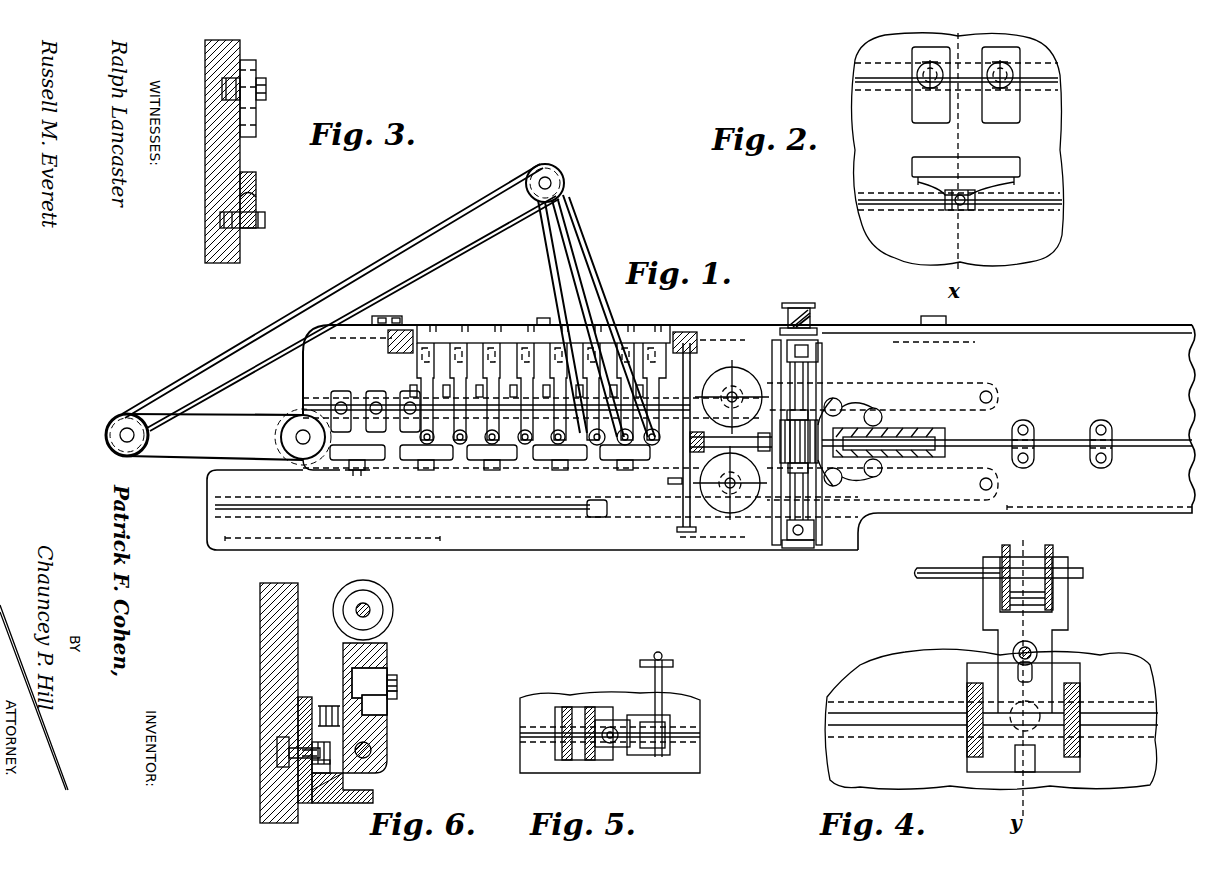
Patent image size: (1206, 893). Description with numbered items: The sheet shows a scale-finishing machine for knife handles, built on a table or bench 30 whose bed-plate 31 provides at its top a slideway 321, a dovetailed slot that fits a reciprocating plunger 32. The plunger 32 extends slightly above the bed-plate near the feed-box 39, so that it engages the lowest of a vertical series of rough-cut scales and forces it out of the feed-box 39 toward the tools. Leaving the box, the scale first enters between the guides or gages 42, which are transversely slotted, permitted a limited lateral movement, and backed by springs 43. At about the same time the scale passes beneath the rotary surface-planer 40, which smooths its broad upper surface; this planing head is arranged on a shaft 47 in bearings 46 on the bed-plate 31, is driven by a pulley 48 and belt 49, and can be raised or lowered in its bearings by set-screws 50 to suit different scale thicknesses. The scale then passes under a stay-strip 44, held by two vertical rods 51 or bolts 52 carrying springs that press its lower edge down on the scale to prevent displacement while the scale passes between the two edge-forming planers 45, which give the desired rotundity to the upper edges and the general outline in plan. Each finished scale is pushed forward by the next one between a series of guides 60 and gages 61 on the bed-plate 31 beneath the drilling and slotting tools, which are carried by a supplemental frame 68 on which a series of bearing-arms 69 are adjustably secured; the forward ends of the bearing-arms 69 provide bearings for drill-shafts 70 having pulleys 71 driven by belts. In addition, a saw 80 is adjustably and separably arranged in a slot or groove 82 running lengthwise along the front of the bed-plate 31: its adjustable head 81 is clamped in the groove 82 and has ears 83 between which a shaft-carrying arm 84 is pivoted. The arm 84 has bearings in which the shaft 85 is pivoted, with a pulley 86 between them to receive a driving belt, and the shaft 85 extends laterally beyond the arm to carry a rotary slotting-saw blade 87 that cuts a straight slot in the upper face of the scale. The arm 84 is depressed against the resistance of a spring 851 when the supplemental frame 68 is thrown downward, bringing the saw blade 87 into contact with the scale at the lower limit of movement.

In FIG. 1, the table or bench 30 is at (607, 550).
In FIG. 1, the bed-plate 31 is at (701, 433).
In FIG. 2, the bed-plate 31 is at (958, 152).
In FIG. 3, the bed-plate 31 is at (240, 250).
In FIG. 6, the bed-plate 31 is at (260, 648).
In FIG. 5, the bed-plate 31 is at (610, 722).
In FIG. 4, the bed-plate 31 is at (991, 719).
In FIG. 1, the reciprocating plunger 32 is at (1134, 438).
In FIG. 1, the slideway 321 is at (1058, 438).
In FIG. 1, the feed-box 39 is at (945, 432).
In FIG. 1, the rotary surface-planer 40 is at (818, 422).
In FIG. 1, the guides or gages 42 is at (845, 407).
In FIG. 1, the springs 43 is at (878, 410).
In FIG. 1, the stay-strip 44 is at (740, 435).
In FIG. 1, the edge-forming planers 45 is at (722, 378).
In FIG. 1, the bearings 46 is at (818, 348).
In FIG. 1, the planing-shaft 47 is at (796, 368).
In FIG. 1, the pulley 48 is at (805, 310).
In FIG. 1, the belt 49 is at (813, 318).
In FIG. 1, the set-screws 50 is at (814, 545).
In FIG. 1, the vertical rods 51 is at (683, 470).
In FIG. 1, the bolts 52 is at (670, 480).
In FIG. 1, the guides 60 is at (376, 391).
In FIG. 2, the guides 60 is at (966, 85).
In FIG. 3, the guides 60 is at (250, 118).
In FIG. 1, the gages 61 is at (358, 445).
In FIG. 2, the gages 61 is at (966, 183).
In FIG. 3, the gages 61 is at (256, 182).
In FIG. 1, the supplemental frame 68 is at (447, 325).
In FIG. 1, the bearing-arms 69 is at (417, 364).
In FIG. 1, the drill-shafts 70 is at (495, 452).
In FIG. 1, the pulleys 71 is at (600, 455).
In FIG. 5, the saw 80 is at (610, 720).
In FIG. 6, the adjustable head 81 is at (298, 718).
In FIG. 5, the adjustable head 81 is at (555, 712).
In FIG. 4, the adjustable head 81 is at (967, 678).
In FIG. 1, the slot or groove 82 is at (505, 510).
In FIG. 6, the slot or groove 82 is at (277, 760).
In FIG. 5, the slot or groove 82 is at (520, 735).
In FIG. 4, the slot or groove 82 is at (888, 718).
In FIG. 6, the ears 83 is at (312, 778).
In FIG. 5, the ears 83 is at (570, 705).
In FIG. 4, the ears 83 is at (967, 745).
In FIG. 6, the shaft-carrying arm 84 is at (365, 723).
In FIG. 5, the shaft-carrying arm 84 is at (590, 705).
In FIG. 4, the shaft-carrying arm 84 is at (998, 628).
In FIG. 5, the shaft 85 is at (662, 680).
In FIG. 4, the shaft 85 is at (935, 578).
In FIG. 6, the spring 851 is at (325, 700).
In FIG. 6, the pulley 86 is at (395, 608).
In FIG. 5, the pulley 86 is at (675, 722).
In FIG. 4, the pulley 86 is at (1002, 598).
In FIG. 5, the rotary slotting-saw blade 87 is at (673, 662).